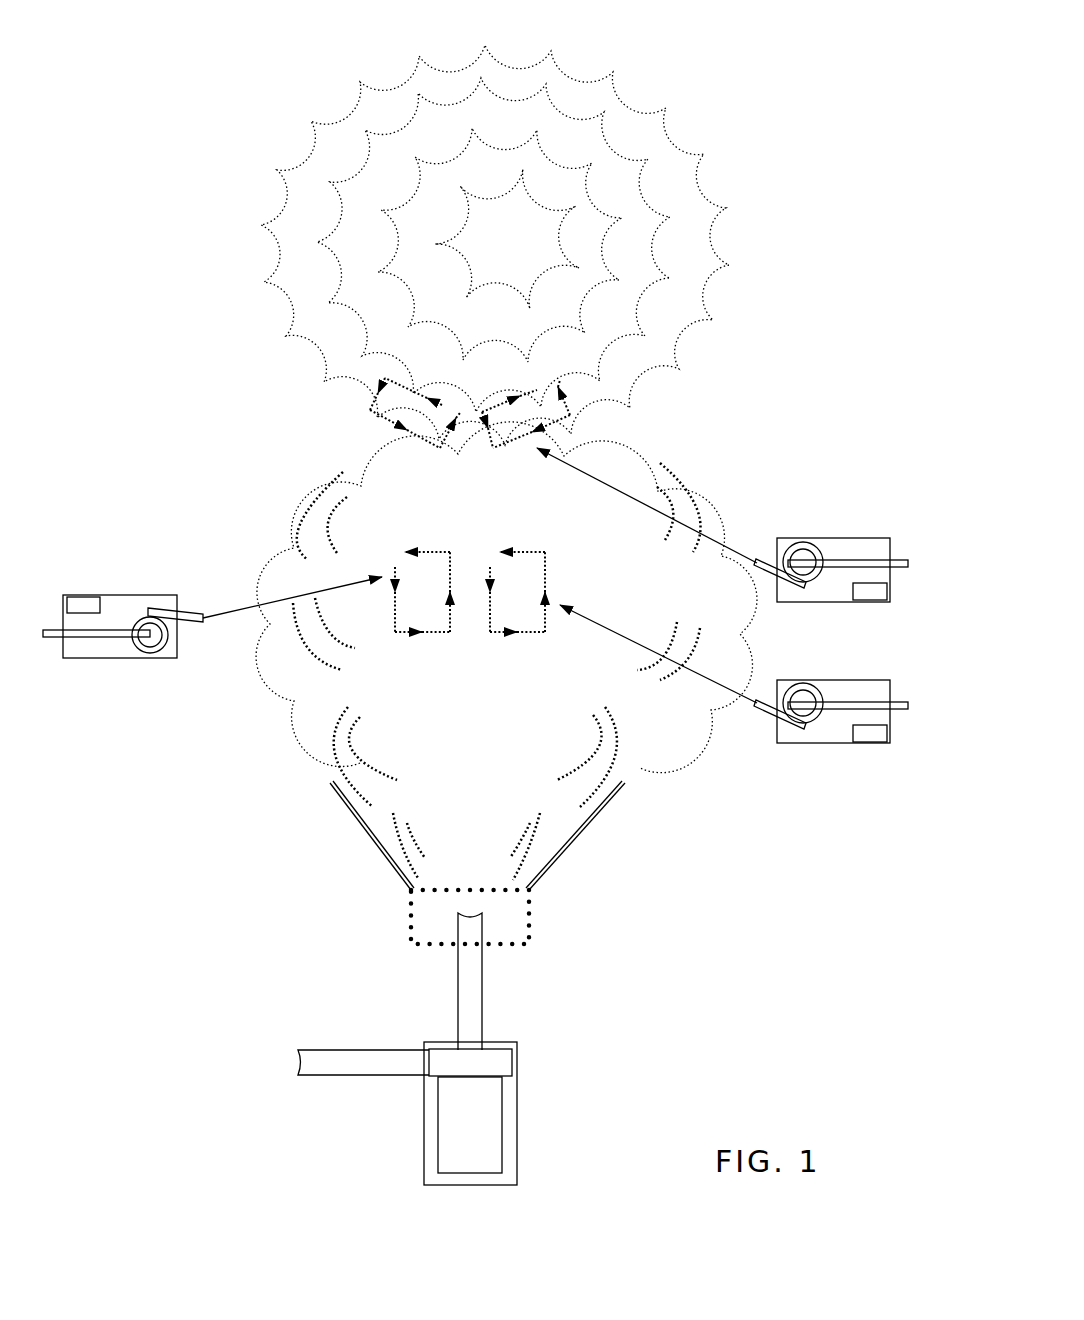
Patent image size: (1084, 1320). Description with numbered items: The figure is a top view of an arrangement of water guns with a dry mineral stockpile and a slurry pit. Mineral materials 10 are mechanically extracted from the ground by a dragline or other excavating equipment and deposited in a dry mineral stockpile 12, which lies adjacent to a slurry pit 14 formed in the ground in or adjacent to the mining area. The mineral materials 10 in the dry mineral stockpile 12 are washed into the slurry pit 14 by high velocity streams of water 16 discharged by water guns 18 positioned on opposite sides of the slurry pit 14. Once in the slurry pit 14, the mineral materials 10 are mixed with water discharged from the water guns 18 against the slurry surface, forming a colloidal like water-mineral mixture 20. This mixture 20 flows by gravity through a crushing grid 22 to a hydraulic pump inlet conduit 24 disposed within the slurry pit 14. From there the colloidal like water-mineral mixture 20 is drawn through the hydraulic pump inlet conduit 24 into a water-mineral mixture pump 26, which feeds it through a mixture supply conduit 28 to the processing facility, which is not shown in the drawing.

The mineral materials 10 is at (545, 245).
The dry mineral stockpile 12 is at (737, 322).
The slurry pit 14 is at (413, 500).
The high velocity streams of water 16 is at (258, 600).
The water guns 18 is at (110, 660).
The colloidal like water-mineral mixture 20 is at (545, 720).
The crushing grid 22 is at (411, 932).
The hydraulic pump inlet conduit 24 is at (482, 1007).
The water-mineral mixture pump 26 is at (502, 1122).
The mixture supply conduit 28 is at (377, 1050).